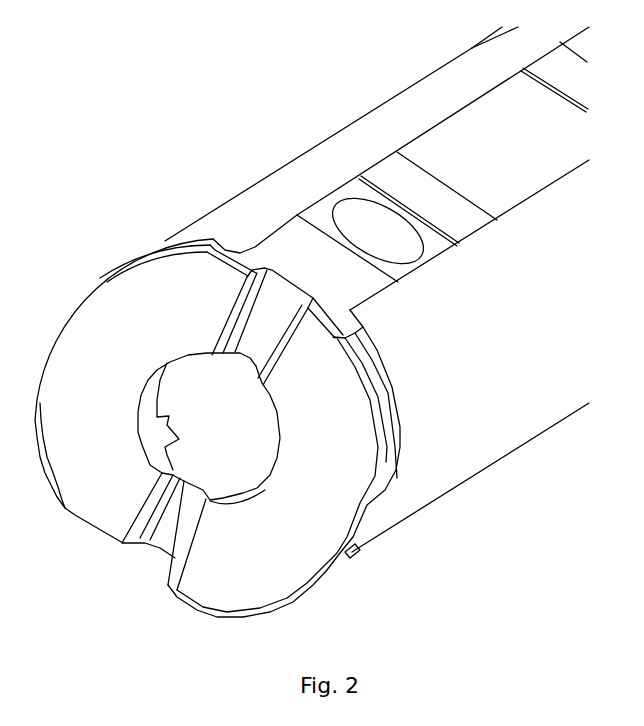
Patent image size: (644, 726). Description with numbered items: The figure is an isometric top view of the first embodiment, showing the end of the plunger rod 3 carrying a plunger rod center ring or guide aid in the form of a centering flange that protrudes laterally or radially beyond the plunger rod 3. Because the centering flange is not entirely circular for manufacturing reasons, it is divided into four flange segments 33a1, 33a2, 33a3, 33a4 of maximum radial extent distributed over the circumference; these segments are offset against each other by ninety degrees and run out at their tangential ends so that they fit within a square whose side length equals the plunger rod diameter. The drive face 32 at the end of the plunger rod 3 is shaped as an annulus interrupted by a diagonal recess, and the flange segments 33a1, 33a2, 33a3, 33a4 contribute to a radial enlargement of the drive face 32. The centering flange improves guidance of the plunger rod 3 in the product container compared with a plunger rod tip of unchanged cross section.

The plunger rod 3 is at (288, 185).
The drive face 32 is at (128, 298).
The flange segment 33a1 is at (157, 242).
The flange segment 33a2 is at (382, 388).
The flange segment 33a3 is at (303, 603).
The flange segment 33a4 is at (52, 484).